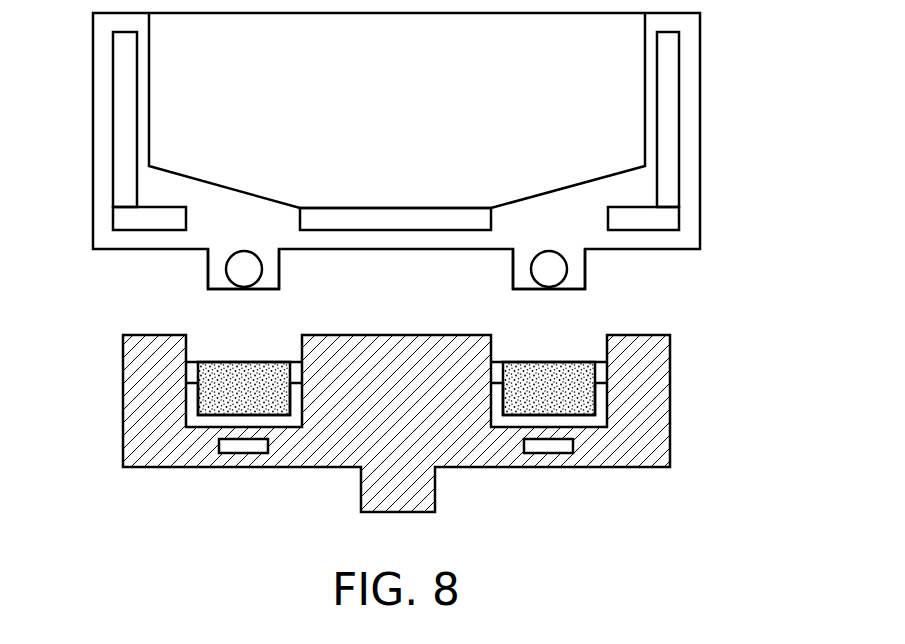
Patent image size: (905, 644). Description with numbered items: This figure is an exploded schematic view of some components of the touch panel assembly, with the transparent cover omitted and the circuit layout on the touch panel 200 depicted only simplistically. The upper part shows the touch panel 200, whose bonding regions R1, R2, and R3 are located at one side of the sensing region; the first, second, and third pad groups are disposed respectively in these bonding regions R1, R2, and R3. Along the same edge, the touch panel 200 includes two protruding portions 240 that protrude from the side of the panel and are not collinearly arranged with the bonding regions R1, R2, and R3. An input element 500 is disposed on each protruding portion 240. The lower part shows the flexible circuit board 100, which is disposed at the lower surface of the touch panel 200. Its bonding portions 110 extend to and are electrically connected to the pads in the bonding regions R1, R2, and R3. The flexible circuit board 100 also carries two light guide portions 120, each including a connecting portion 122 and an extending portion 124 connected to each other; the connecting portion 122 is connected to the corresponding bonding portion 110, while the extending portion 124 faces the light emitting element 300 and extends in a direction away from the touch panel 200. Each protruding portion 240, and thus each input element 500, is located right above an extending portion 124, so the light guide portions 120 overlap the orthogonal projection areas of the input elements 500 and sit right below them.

The flexible circuit board 100 is at (474, 428).
The bonding portion 110 is at (647, 353).
The light guide portion 120 is at (505, 405).
The connecting portion 122 is at (580, 373).
The extending portion 124 is at (580, 403).
The touch panel 200 is at (700, 105).
The protruding portion 240 is at (272, 268).
The light emitting element 300 is at (217, 447).
The input element 500 is at (233, 267).
The bonding region R1 is at (112, 214).
The bonding region R2 is at (681, 218).
The bonding region R3 is at (395, 232).